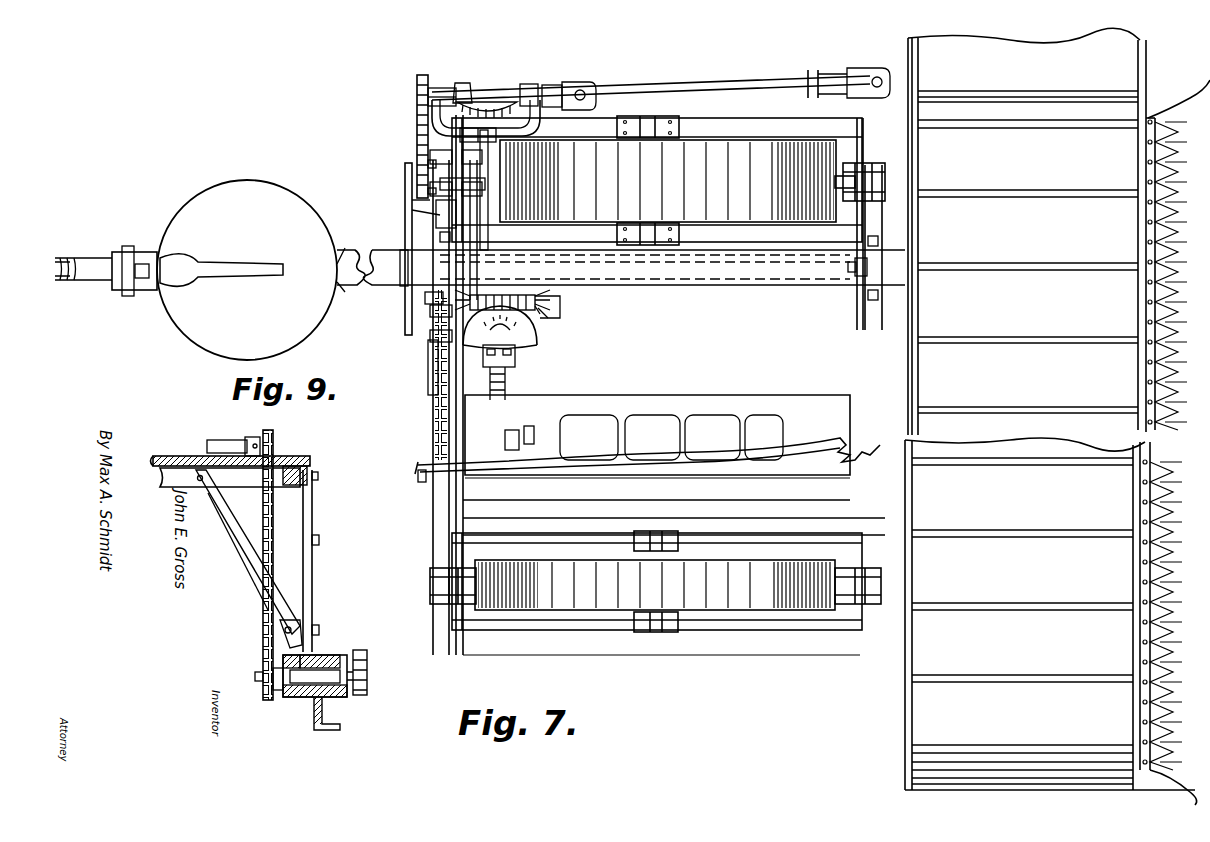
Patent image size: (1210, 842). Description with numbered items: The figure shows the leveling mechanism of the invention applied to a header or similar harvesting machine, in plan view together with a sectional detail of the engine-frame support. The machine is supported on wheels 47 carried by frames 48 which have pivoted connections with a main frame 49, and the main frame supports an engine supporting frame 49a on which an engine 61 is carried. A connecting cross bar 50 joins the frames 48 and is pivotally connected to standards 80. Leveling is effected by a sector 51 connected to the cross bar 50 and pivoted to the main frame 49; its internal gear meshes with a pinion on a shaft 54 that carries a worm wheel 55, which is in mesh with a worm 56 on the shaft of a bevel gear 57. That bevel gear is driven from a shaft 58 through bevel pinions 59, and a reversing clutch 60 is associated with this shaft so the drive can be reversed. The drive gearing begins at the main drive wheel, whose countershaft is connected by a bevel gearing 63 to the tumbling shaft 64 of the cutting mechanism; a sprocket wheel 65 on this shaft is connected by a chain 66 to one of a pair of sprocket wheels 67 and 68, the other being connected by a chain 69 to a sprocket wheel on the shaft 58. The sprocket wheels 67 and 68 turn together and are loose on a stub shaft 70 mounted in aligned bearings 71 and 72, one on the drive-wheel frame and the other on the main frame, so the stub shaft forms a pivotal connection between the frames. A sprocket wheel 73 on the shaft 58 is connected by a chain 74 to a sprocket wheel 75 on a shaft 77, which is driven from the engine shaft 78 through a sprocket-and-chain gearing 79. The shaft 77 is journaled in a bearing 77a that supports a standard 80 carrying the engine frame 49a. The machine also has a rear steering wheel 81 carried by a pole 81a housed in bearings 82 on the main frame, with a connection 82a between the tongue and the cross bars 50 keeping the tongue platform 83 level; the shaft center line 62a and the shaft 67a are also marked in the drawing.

In FIG. 7, the wheels 47 is at (655, 375).
In FIG. 7, the wheel frames 48 is at (778, 120).
In FIG. 7, the main frame 49 is at (442, 506).
In FIG. 9, the main frame 49 is at (345, 717).
In FIG. 7, the engine supporting frame 49a is at (800, 405).
In FIG. 9, the engine supporting frame 49a is at (308, 478).
In FIG. 7, the cross bar 50 is at (466, 490).
In FIG. 9, the cross bar 50 is at (319, 540).
In FIG. 7, the sector 51 is at (458, 402).
In FIG. 7, the shaft 54 is at (482, 398).
In FIG. 7, the worm wheel 55 is at (508, 400).
In FIG. 7, the worm 56 is at (518, 370).
In FIG. 7, the bevel gear 57 is at (524, 338).
In FIG. 7, the shaft 58 is at (436, 345).
In FIG. 7, the bevel pinions 59 is at (472, 292).
In FIG. 7, the reversing clutch 60 is at (515, 294).
In FIG. 7, the engine 61 is at (745, 410).
In FIG. 7, the shaft center line 62a is at (648, 250).
In FIG. 7, the bevel gearing 63 is at (468, 92).
In FIG. 7, the tumbling shaft 64 is at (698, 76).
In FIG. 7, the sprocket wheel 65 is at (422, 77).
In FIG. 7, the chain 66 is at (418, 128).
In FIG. 7, the sprocket wheel 67 is at (418, 204).
In FIG. 7, the shaft 67a is at (472, 185).
In FIG. 7, the sprocket wheel 68 is at (405, 168).
In FIG. 7, the chain 69 is at (404, 203).
In FIG. 7, the stub shaft 70 is at (438, 165).
In FIG. 7, the bearing 71 is at (478, 190).
In FIG. 7, the bearing 72 is at (446, 221).
In FIG. 7, the sprocket wheel 73 is at (430, 292).
In FIG. 7, the chain 74 is at (434, 388).
In FIG. 7, the sprocket wheel 75 is at (418, 478).
In FIG. 9, the sprocket wheel 75 is at (368, 654).
In FIG. 9, the shaft 77 is at (330, 668).
In FIG. 9, the bearing 77a is at (326, 657).
In FIG. 9, the engine shaft 78 is at (218, 452).
In FIG. 9, the sprocket-and-chain gearing 79 is at (273, 522).
In FIG. 9, the standard 80 is at (312, 596).
In FIG. 7, the rear steering wheel 81 is at (86, 262).
In FIG. 7, the pole 81a is at (402, 268).
In FIG. 7, the bearings 82 is at (435, 265).
In FIG. 7, the connection 82a is at (404, 246).
In FIG. 7, the tongue platform 83 is at (247, 270).